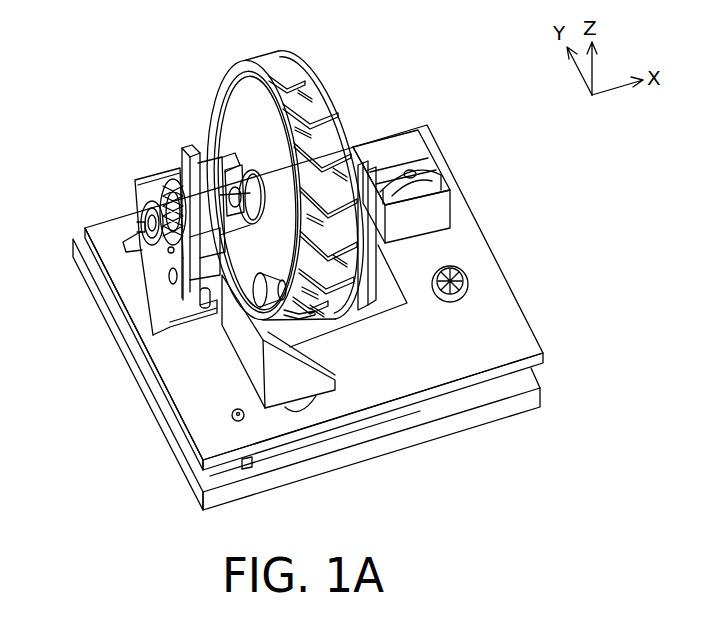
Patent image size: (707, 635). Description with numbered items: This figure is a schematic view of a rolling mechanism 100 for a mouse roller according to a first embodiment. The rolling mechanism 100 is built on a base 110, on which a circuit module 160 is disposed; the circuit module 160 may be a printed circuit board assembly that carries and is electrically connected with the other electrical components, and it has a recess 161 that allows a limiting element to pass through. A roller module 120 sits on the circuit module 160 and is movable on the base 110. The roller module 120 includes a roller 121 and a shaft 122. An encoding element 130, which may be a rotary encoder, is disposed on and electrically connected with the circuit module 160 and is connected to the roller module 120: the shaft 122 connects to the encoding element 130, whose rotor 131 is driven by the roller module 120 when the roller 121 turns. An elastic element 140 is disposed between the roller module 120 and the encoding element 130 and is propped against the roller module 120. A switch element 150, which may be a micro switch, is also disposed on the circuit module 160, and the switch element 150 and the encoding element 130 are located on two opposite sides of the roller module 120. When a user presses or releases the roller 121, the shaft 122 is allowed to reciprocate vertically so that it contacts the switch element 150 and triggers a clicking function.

The rolling mechanism 100 is at (57, 47).
The base 110 is at (528, 403).
The roller module 120 is at (478, 25).
The roller 121 is at (285, 55).
The shaft 122 is at (377, 157).
The encoding element 130 is at (135, 200).
The rotor 131 is at (165, 177).
The elastic element 140 is at (180, 283).
The switch element 150 is at (430, 213).
The circuit module 160 is at (533, 365).
The recess 161 is at (390, 308).